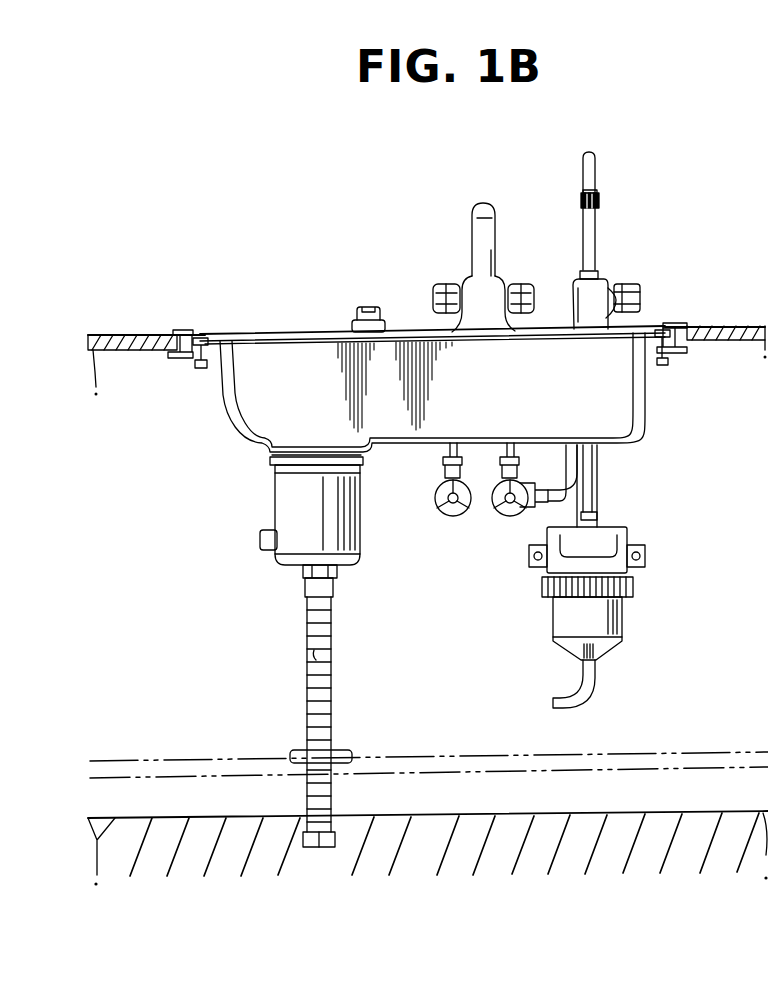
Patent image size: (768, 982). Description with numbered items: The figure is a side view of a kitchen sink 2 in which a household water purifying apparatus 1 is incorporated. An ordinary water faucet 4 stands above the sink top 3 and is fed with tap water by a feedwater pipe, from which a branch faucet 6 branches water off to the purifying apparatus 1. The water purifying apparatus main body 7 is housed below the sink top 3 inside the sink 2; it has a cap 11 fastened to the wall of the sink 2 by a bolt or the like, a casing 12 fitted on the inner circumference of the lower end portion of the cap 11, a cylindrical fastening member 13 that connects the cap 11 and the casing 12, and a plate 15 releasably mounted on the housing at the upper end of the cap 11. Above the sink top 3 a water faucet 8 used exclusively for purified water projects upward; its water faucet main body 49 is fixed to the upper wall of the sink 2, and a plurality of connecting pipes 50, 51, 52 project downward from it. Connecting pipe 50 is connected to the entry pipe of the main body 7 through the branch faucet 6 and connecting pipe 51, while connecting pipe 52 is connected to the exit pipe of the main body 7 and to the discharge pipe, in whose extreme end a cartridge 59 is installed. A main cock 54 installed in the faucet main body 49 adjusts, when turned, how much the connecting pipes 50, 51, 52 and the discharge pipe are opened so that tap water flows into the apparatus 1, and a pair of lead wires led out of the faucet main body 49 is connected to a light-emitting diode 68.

The household water purifying apparatus 1 is at (611, 205).
The kitchen sink 2 is at (137, 334).
The sink top 3 is at (256, 402).
The water faucet 4 is at (477, 247).
The branch faucet 6 is at (505, 512).
The water purifying apparatus main body 7 is at (618, 602).
The water faucet for purified water 8 is at (596, 146).
The cap 11 is at (632, 537).
The casing 12 is at (627, 617).
The cylindrical fastening member 13 is at (638, 585).
The plate 15 is at (602, 533).
The water faucet main body 49 is at (600, 292).
The connecting pipe 50 is at (600, 458).
The connecting pipe 51 is at (598, 478).
The connecting pipe 52 is at (543, 512).
The main cock 54 is at (641, 291).
The cartridge 59 is at (599, 202).
The light-emitting diode 68 is at (583, 201).